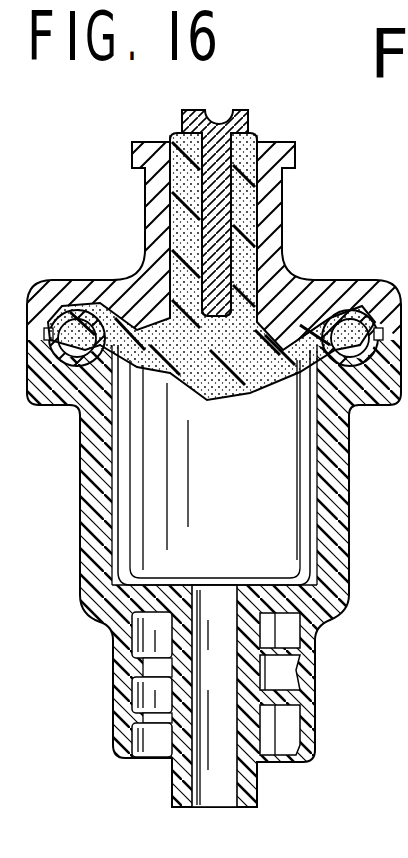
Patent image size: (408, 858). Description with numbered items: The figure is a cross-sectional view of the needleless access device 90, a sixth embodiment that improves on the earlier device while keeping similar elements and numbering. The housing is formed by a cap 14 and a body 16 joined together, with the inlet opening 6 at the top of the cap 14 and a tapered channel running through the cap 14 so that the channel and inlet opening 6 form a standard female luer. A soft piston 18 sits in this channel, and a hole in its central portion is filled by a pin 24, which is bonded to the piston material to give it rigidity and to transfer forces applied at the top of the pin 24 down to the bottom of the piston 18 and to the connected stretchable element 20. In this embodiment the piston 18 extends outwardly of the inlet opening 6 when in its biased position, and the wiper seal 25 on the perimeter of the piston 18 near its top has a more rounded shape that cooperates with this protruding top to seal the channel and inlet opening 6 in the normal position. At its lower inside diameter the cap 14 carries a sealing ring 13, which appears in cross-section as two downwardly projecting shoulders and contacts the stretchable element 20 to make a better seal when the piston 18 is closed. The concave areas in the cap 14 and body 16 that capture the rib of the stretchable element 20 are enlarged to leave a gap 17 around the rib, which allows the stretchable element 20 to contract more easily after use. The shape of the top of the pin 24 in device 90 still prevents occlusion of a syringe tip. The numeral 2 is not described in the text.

The seal assembly 2 is at (352, 305).
The inlet opening 6 is at (263, 135).
The sealing ring 13 is at (143, 360).
The cap 14 is at (345, 290).
The body 16 is at (337, 506).
The gap 17 is at (325, 292).
The piston 18 is at (263, 158).
The stretchable element 20 is at (133, 380).
The pin 24 is at (277, 203).
The wiper seal 25 is at (170, 135).
The device 90 is at (68, 467).